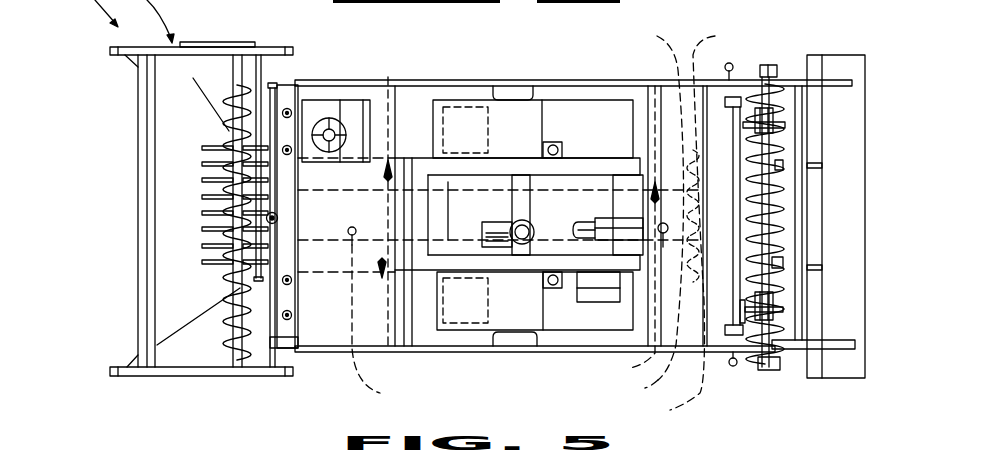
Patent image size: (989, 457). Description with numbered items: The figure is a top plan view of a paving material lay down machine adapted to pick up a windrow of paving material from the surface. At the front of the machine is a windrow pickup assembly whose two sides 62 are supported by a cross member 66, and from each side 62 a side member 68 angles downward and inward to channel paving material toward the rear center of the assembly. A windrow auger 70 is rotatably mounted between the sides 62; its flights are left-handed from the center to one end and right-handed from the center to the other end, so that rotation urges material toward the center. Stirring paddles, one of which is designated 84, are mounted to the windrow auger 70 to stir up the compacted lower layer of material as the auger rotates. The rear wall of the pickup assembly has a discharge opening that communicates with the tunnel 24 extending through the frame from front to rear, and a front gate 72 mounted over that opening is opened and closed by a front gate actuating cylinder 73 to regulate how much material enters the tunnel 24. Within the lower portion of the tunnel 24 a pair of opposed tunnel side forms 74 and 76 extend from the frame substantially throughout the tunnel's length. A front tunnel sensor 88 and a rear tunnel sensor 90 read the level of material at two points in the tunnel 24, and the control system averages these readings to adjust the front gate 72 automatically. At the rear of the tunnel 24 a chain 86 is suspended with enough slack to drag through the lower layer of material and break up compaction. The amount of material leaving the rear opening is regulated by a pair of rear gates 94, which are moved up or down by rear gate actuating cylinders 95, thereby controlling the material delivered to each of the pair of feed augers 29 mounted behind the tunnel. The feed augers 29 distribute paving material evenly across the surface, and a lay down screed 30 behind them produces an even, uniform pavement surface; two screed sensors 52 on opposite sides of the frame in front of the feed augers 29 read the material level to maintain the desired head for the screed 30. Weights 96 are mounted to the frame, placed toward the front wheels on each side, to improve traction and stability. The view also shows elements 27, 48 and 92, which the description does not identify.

The tunnel 24 is at (648, 70).
The motor 27 is at (318, 100).
The feed augers 29 is at (770, 148).
The lay down screed 30 is at (837, 217).
The auger 48 is at (720, 175).
The screed sensors 52 is at (732, 63).
The sides 62 is at (198, 48).
The cross member 66 is at (137, 205).
The side member 68 is at (193, 78).
The windrow auger 70 is at (240, 330).
The front gate 72 is at (298, 198).
The front gate actuating cylinder 73 is at (278, 217).
The tunnel side form 74 is at (388, 77).
The tunnel side form 76 is at (388, 347).
The stirring paddle 84 is at (202, 175).
The chain 86 is at (645, 388).
The front tunnel sensor 88 is at (380, 393).
The rear tunnel sensor 90 is at (630, 368).
The rail 92 is at (797, 182).
The rear gates 94 is at (657, 36).
The rear gate actuating cylinders 95 is at (688, 224).
The weights 96 is at (457, 107).